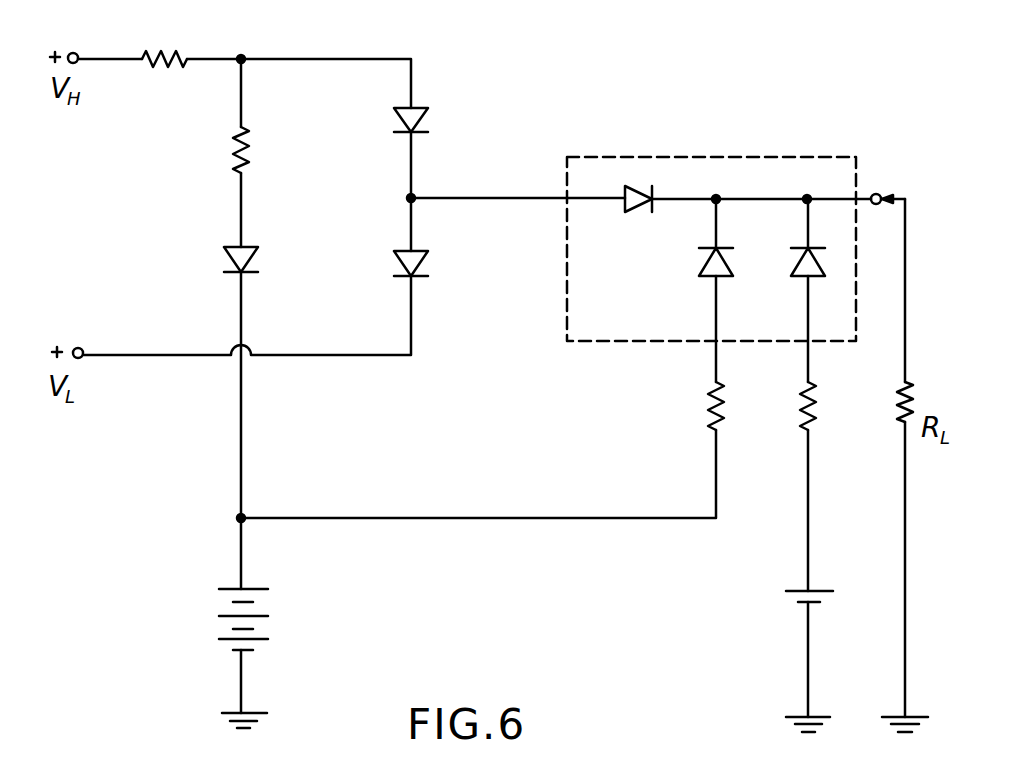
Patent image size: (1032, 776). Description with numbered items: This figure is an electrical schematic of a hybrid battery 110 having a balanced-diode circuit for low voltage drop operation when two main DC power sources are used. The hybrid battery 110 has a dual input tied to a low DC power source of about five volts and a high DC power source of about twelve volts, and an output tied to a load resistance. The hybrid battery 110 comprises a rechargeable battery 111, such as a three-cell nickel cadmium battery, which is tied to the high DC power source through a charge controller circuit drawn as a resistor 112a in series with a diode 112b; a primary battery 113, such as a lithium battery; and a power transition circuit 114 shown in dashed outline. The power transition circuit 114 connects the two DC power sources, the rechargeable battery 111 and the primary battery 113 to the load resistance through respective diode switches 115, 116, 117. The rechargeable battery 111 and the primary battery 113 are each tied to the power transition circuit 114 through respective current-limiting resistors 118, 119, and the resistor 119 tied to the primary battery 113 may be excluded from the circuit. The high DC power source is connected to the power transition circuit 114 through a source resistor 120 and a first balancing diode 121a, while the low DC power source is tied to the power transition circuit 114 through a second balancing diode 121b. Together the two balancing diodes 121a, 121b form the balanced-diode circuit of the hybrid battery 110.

The hybrid battery 110 is at (706, 67).
The rechargeable battery 111 is at (268, 640).
The resistor 112a is at (233, 166).
The diode 112b is at (222, 260).
The primary battery 113 is at (798, 589).
The power transition circuit 114 is at (762, 157).
The diode switch 115 is at (628, 210).
The diode switch 116 is at (700, 275).
The diode switch 117 is at (802, 280).
The current-limiting resistor 118 is at (706, 418).
The current-limiting resistor 119 is at (800, 426).
The source resistor 120 is at (176, 56).
The first balancing diode 121a is at (430, 118).
The second balancing diode 121b is at (430, 268).